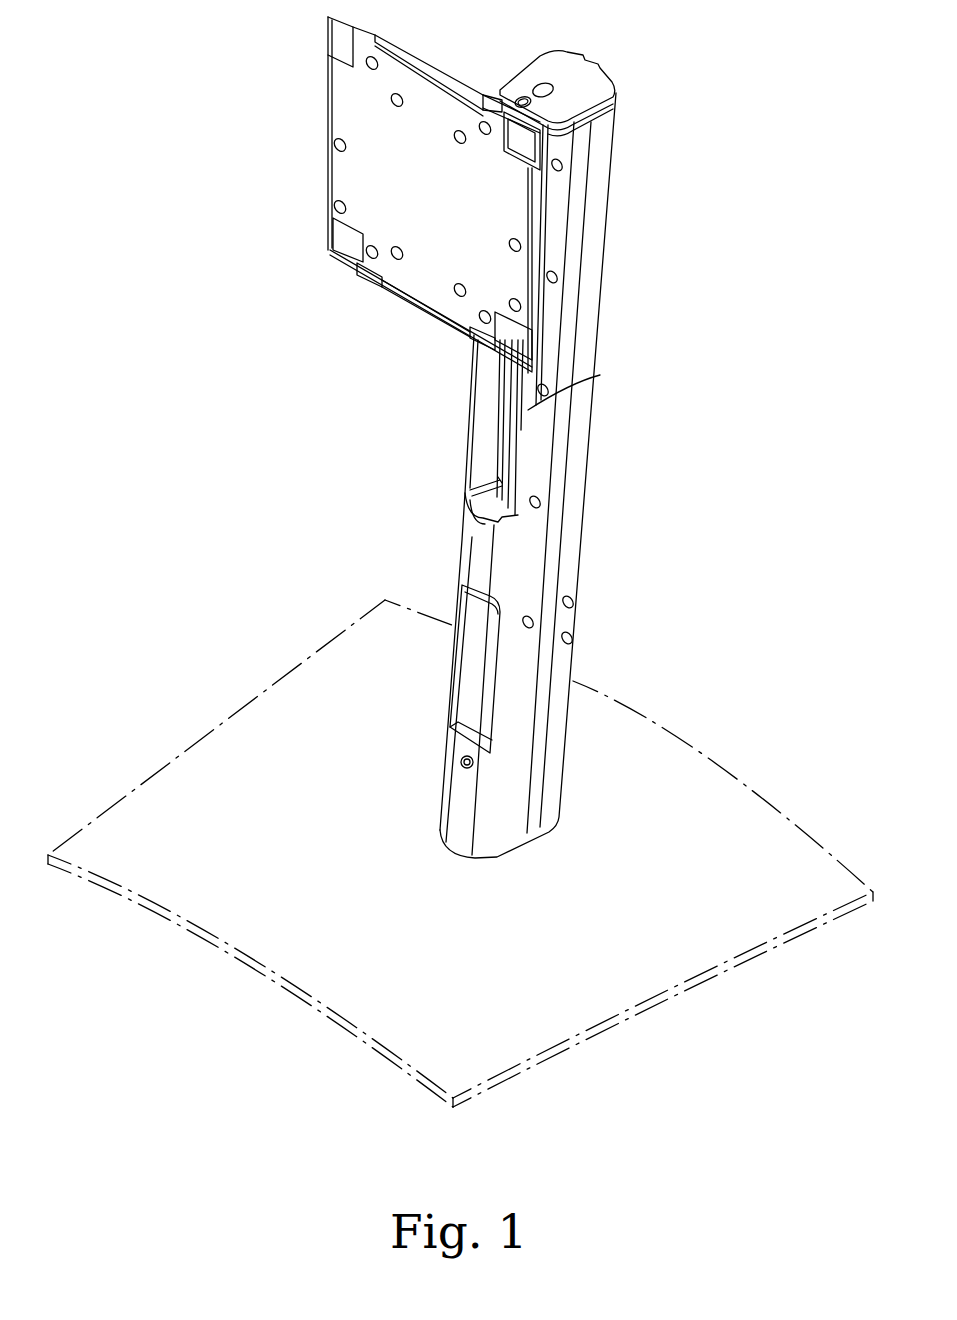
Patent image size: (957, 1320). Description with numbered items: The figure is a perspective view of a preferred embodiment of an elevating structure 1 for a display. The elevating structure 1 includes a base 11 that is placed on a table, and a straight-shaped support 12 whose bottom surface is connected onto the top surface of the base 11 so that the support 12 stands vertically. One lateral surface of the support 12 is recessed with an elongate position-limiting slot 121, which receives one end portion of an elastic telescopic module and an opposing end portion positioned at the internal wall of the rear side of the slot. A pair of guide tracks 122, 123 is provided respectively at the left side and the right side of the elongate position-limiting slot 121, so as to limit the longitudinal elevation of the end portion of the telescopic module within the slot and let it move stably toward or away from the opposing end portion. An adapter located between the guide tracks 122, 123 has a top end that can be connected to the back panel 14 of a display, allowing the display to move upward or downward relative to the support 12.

The elevating structure 1 is at (672, 236).
The base 11 is at (682, 793).
The support 12 is at (592, 469).
The elongate position-limiting slot 121 is at (495, 427).
The guide track 122 is at (483, 394).
The guide track 123 is at (485, 458).
The back panel 14 is at (347, 180).